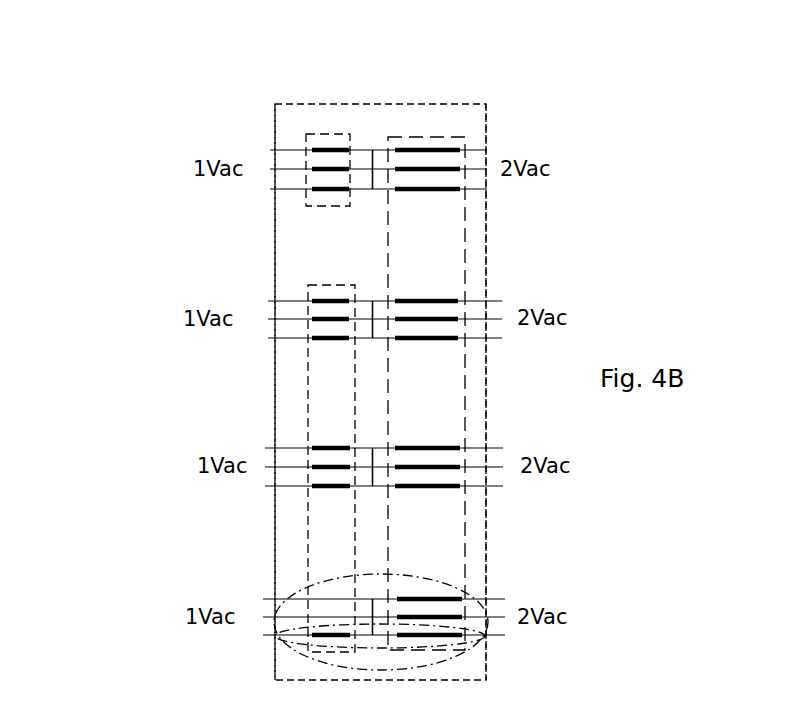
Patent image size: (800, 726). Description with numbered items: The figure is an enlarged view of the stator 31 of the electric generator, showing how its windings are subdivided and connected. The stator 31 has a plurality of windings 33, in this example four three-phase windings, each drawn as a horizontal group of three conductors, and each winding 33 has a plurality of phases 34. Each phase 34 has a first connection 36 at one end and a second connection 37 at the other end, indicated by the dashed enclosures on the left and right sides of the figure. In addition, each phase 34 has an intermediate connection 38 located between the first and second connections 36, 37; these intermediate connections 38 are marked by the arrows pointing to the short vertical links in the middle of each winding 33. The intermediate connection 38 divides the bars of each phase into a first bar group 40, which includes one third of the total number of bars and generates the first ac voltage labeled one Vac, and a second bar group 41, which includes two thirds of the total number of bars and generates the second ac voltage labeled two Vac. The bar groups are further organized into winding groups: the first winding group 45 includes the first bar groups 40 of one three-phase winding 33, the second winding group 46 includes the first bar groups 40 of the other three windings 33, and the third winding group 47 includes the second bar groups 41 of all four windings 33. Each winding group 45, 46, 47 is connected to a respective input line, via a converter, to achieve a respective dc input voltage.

The stator 31 is at (138, 87).
The first connection 36 is at (267, 124).
The second connection 37 is at (496, 130).
The intermediate connection 38 is at (367, 120).
The first winding group 45 is at (335, 134).
The second winding group 46 is at (313, 283).
The third winding group 47 is at (465, 219).
The winding 33 is at (323, 663).
The phase 34 is at (298, 643).
The first bar group 40 is at (333, 635).
The second bar group 41 is at (432, 635).